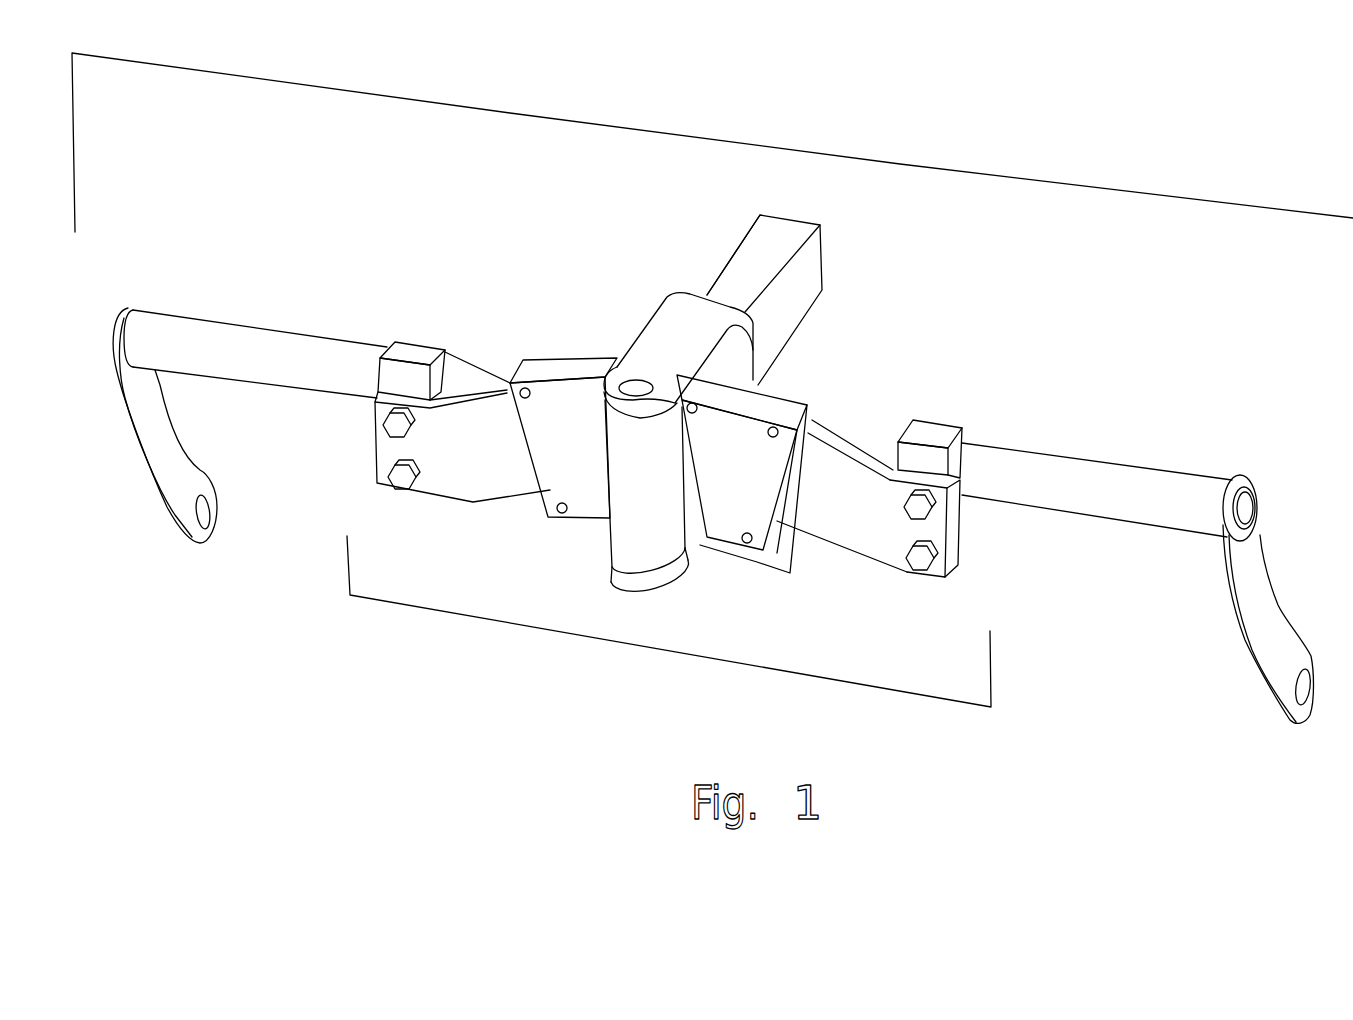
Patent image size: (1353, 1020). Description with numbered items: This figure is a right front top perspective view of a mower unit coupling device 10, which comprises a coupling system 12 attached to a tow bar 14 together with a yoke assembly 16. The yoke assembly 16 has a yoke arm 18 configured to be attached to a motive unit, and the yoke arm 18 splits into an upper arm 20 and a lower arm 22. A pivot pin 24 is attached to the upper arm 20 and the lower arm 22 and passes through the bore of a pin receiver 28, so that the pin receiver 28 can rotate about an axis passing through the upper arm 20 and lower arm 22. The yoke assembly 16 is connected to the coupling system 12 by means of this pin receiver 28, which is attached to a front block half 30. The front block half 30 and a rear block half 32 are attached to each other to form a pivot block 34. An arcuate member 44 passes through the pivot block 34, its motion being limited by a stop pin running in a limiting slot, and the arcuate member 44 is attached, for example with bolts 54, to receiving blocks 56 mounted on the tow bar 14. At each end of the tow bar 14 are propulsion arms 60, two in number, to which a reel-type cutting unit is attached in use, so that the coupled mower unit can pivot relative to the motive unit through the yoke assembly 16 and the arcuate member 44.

The mower unit coupling device 10 is at (676, 132).
The coupling system 12 is at (667, 650).
The tow bar 14 is at (1122, 482).
The yoke assembly 16 is at (690, 300).
The yoke arm 18 is at (811, 287).
The upper arm 20 is at (657, 335).
The lower arm 22 is at (655, 583).
The pivot pin 24 is at (632, 385).
The pin receiver 28 is at (620, 528).
The front block half 30 is at (553, 497).
The rear block half 32 is at (541, 356).
The pivot block 34 is at (833, 411).
The arcuate member 44 is at (845, 537).
The bolts 54 is at (395, 467).
The receiving blocks 56 is at (413, 340).
The propulsion arms 60 is at (182, 462).